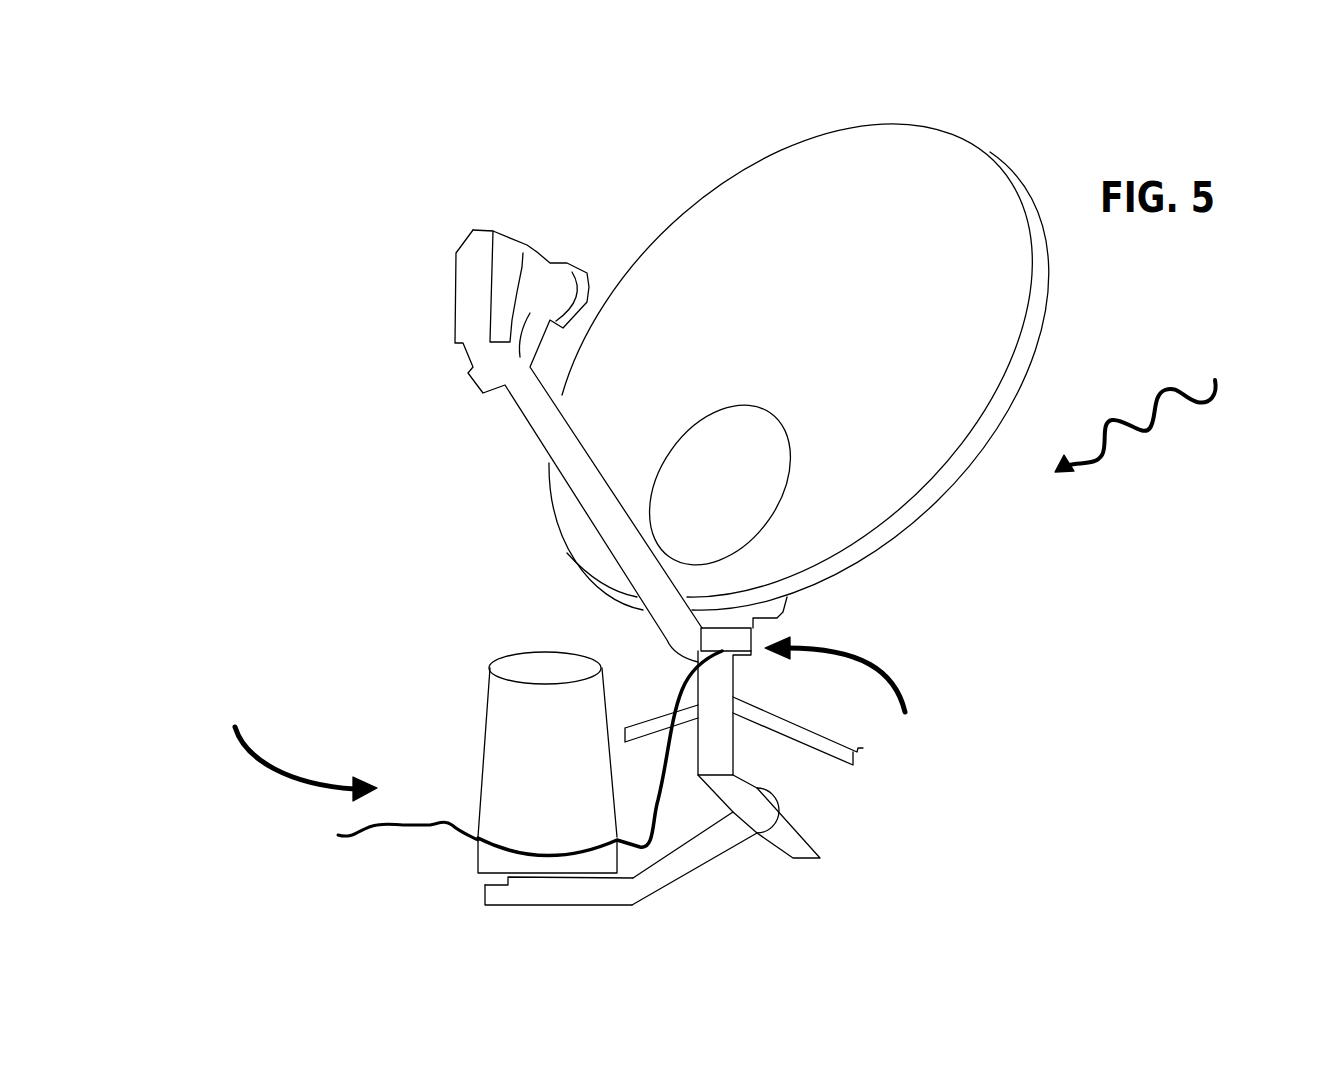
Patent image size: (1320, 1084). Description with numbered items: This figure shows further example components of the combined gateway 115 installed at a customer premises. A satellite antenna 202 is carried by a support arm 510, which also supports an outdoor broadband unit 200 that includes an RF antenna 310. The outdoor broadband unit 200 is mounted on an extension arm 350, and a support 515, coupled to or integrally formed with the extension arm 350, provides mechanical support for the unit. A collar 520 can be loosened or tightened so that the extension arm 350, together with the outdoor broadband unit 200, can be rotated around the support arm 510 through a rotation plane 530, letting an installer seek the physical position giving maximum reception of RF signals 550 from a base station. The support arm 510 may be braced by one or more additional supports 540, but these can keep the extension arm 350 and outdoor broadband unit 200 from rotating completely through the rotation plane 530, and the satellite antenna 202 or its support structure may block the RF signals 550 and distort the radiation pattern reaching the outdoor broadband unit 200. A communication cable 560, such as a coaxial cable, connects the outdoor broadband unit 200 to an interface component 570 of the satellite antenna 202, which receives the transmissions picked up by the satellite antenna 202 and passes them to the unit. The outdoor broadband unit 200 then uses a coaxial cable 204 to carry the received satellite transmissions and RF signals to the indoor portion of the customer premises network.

The combined gateway 115 is at (283, 150).
The satellite antenna 202 is at (903, 530).
The outdoor broadband unit 200 is at (500, 698).
The RF antenna 310 is at (523, 689).
The coaxial cable 204 is at (412, 822).
The extension arm 350 is at (698, 852).
The support arm 510 is at (805, 848).
The support 515 is at (485, 859).
The collar 520 is at (763, 803).
The rotation plane 530 is at (602, 736).
The additional supports 540 is at (638, 728).
The RF signals 550 is at (1150, 433).
The communication cable 560 is at (683, 677).
The interface component 570 is at (740, 643).